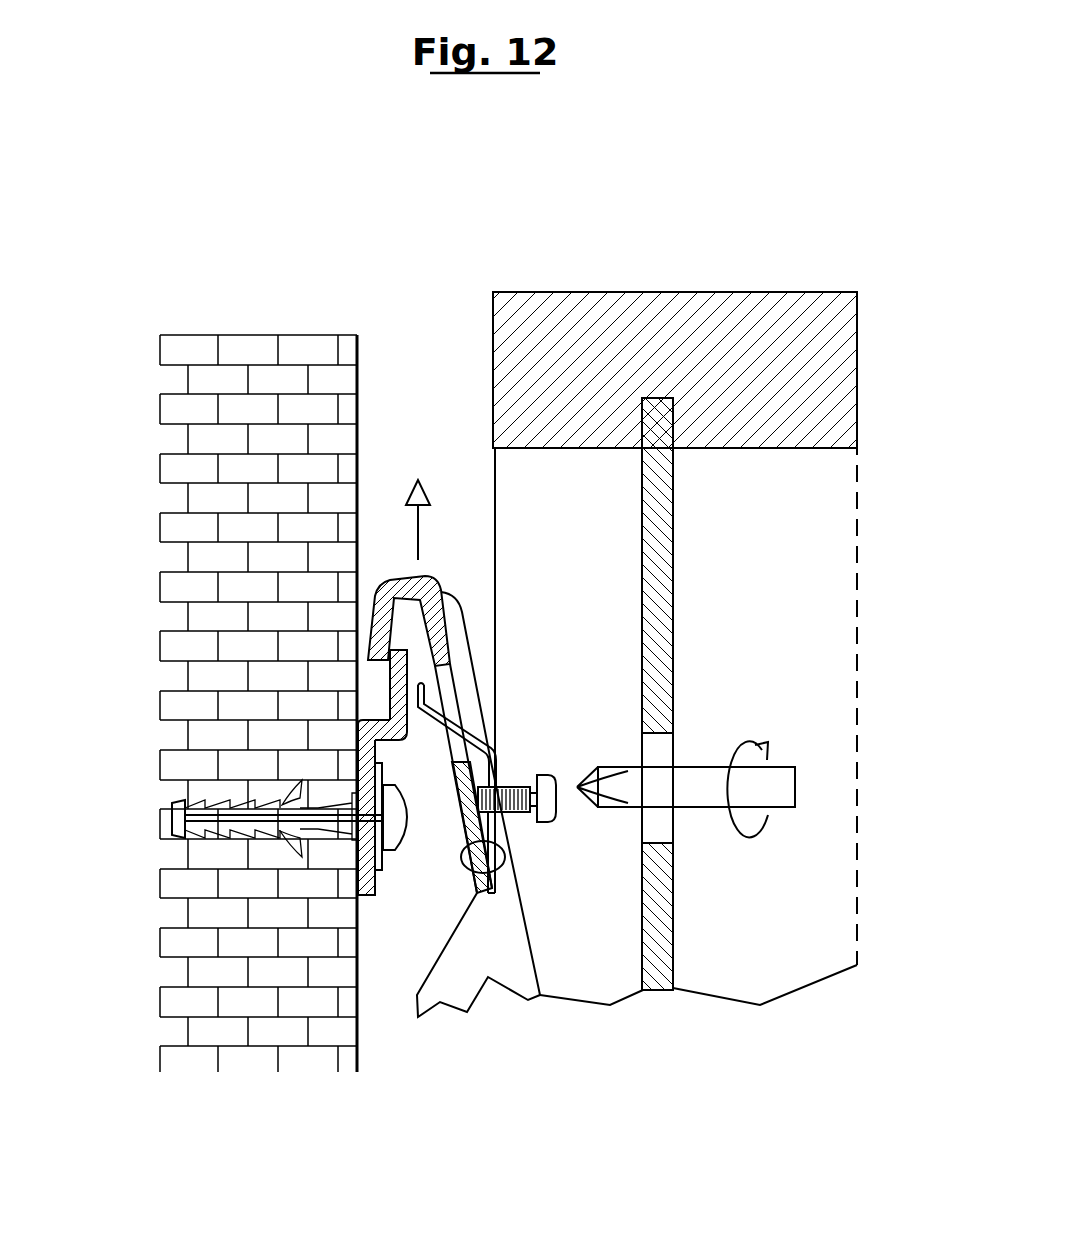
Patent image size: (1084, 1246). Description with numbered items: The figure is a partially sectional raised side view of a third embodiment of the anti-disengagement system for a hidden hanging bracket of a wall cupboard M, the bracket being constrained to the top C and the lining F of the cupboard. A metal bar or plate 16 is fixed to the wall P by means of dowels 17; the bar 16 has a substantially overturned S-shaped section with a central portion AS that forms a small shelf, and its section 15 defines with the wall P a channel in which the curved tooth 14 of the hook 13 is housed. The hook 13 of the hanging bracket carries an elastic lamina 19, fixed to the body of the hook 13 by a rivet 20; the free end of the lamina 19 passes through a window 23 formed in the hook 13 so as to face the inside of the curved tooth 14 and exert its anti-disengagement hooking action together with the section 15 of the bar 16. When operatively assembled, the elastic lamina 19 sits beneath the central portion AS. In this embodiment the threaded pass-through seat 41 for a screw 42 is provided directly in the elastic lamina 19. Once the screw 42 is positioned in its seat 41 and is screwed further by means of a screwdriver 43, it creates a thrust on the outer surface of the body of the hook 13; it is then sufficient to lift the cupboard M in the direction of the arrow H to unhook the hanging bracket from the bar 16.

The wall P is at (263, 383).
The wall cupboard M is at (715, 247).
The top C is at (767, 305).
The lining F is at (667, 478).
The arrow H is at (427, 520).
The central portion AS is at (377, 721).
The hook 13 is at (507, 958).
The curved tooth 14 is at (375, 632).
The section 15 is at (393, 692).
The bar 16 is at (378, 897).
The dowels 17 is at (200, 822).
The elastic lamina 19 is at (457, 727).
The rivet 20 is at (500, 857).
The window 23 is at (446, 680).
The threaded pass-through seat 41 is at (505, 818).
The screw 42 is at (547, 775).
The screwdriver 43 is at (770, 780).